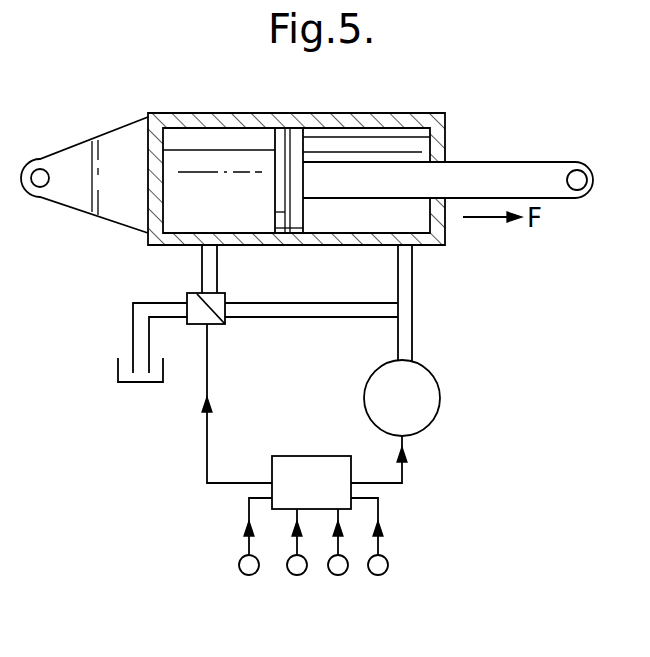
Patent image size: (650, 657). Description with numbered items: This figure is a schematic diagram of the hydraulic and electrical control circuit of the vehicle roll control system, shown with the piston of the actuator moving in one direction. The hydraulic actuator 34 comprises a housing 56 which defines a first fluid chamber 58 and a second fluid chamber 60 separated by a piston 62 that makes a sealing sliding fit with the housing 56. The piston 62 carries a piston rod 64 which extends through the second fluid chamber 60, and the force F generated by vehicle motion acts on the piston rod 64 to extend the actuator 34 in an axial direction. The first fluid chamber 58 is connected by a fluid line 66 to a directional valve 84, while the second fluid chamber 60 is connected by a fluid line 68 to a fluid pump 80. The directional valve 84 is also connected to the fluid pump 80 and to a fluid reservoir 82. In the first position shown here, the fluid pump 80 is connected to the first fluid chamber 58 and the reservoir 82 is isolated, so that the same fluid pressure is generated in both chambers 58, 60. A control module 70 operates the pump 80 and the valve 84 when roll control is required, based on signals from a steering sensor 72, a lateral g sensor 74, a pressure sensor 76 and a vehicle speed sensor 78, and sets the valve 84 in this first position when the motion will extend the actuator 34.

The hydraulic actuator 34 is at (427, 110).
The housing 56 is at (251, 121).
The first fluid chamber 58 is at (192, 142).
The second fluid chamber 60 is at (383, 142).
The piston 62 is at (297, 132).
The piston rod 64 is at (524, 166).
The fluid line 66 is at (217, 273).
The fluid line 68 is at (413, 275).
The control module 70 is at (320, 472).
The steering sensor 72 is at (249, 575).
The lateral g sensor 74 is at (297, 575).
The pressure sensor 76 is at (338, 575).
The vehicle speed sensor 78 is at (378, 575).
The fluid pump 80 is at (428, 405).
The fluid reservoir 82 is at (147, 387).
The directional valve 84 is at (213, 325).